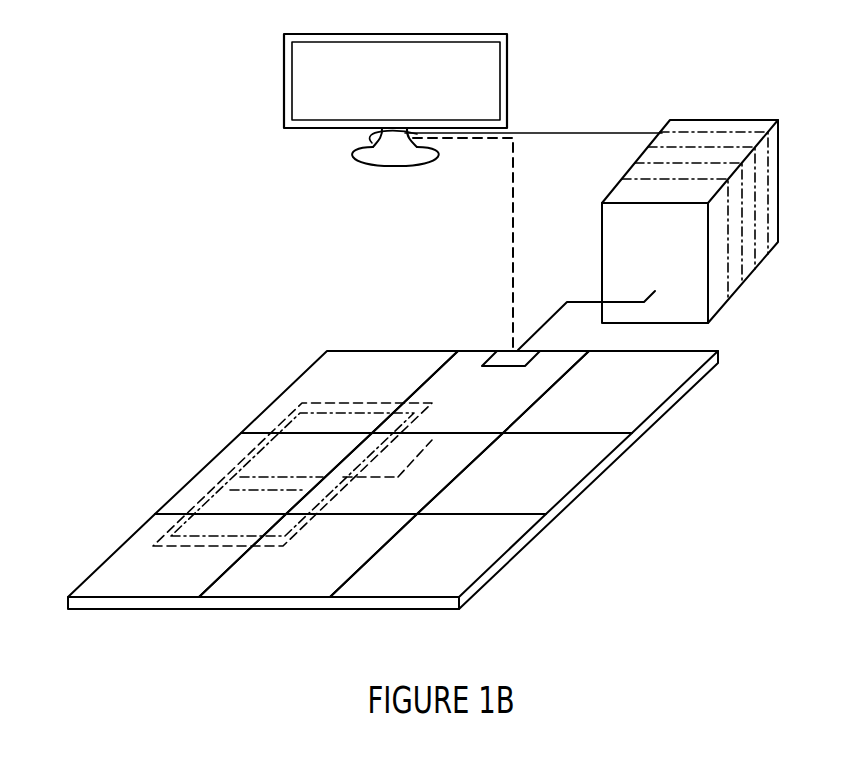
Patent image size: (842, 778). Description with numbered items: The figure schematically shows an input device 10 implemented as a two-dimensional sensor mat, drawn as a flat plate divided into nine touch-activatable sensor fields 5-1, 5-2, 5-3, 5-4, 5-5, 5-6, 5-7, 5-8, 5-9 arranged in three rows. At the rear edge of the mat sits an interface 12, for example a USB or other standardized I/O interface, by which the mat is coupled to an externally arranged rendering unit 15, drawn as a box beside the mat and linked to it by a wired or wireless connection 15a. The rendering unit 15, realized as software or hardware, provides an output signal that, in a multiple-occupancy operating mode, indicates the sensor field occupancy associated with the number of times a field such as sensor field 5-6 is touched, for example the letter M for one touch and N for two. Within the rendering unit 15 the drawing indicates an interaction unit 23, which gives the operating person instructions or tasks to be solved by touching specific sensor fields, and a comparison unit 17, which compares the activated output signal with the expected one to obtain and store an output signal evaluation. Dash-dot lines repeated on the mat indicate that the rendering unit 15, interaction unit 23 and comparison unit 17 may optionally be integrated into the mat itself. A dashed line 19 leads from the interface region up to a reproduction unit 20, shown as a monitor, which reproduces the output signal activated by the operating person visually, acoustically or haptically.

The reproduction unit 20 is at (507, 88).
The dashed reference line 19 is at (508, 196).
The rendering unit 15 is at (728, 125).
The wired or wireless connection 15a is at (575, 302).
The comparison unit 17 is at (637, 165).
The interaction unit 23 is at (668, 140).
The interface 12 is at (505, 355).
The input device 10 is at (374, 296).
The sensor field 5-1 is at (343, 357).
The sensor field 5-2 is at (460, 353).
The sensor field 5-3 is at (645, 400).
The sensor field 5-4 is at (240, 432).
The sensor field 5-5 is at (420, 487).
The sensor field 5-6 is at (582, 460).
The sensor field 5-7 is at (103, 588).
The sensor field 5-8 is at (305, 588).
The sensor field 5-9 is at (490, 548).